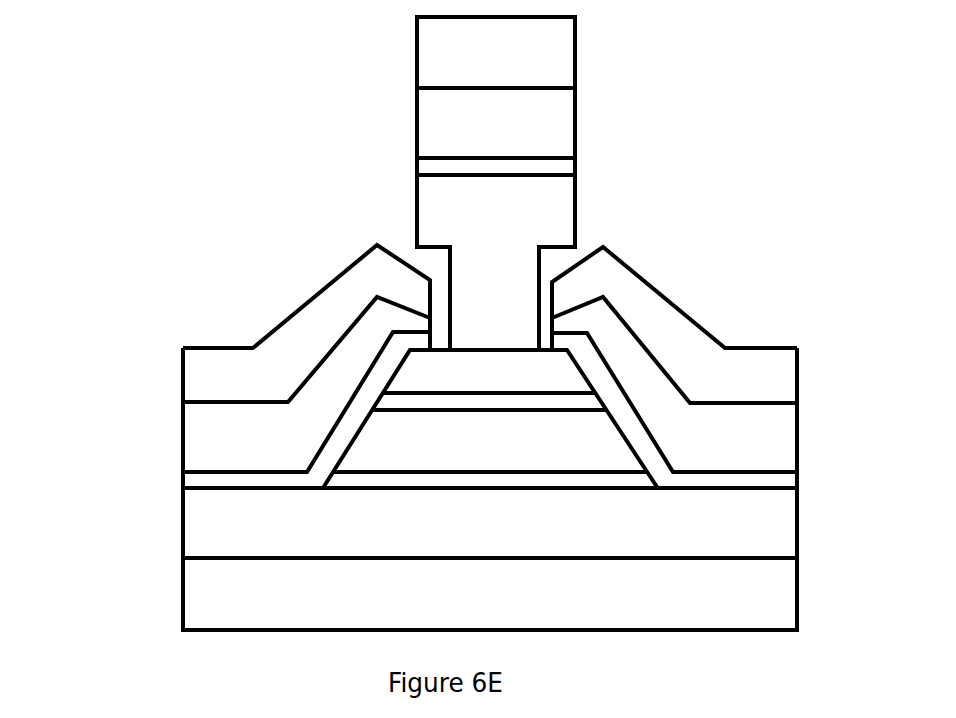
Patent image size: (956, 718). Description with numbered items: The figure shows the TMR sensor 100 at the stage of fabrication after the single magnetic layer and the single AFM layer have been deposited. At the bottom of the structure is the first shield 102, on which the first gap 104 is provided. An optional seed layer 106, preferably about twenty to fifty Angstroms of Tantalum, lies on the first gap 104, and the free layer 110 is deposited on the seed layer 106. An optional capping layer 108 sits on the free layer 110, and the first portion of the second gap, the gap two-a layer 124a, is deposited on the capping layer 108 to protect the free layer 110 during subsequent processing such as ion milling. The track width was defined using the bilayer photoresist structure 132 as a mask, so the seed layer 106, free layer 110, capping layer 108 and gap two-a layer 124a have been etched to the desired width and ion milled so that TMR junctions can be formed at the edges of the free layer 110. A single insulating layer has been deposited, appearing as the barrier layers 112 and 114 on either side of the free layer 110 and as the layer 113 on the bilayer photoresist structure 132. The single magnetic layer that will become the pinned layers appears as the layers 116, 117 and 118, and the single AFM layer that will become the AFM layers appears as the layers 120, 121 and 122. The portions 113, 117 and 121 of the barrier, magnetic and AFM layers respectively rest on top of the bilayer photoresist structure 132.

The TMR sensor 100 is at (120, 243).
The first shield 102 is at (797, 588).
The first gap 104 is at (182, 540).
The seed layer 106 is at (388, 490).
The capping layer 108 is at (370, 402).
The free layer 110 is at (622, 474).
The barrier layer 112 is at (182, 480).
The barrier layer 114 is at (797, 483).
The pinned layer 116 is at (180, 453).
The pinned layer 118 is at (797, 437).
The AFM layer 120 is at (180, 367).
The AFM layer 122 is at (797, 368).
The gap 2a layer 124a is at (582, 368).
The barrier layer portion 113 is at (417, 167).
The magnetic layer portion 117 is at (417, 120).
The AFM layer portion 121 is at (575, 38).
The bilayer photoresist structure 132 is at (575, 228).